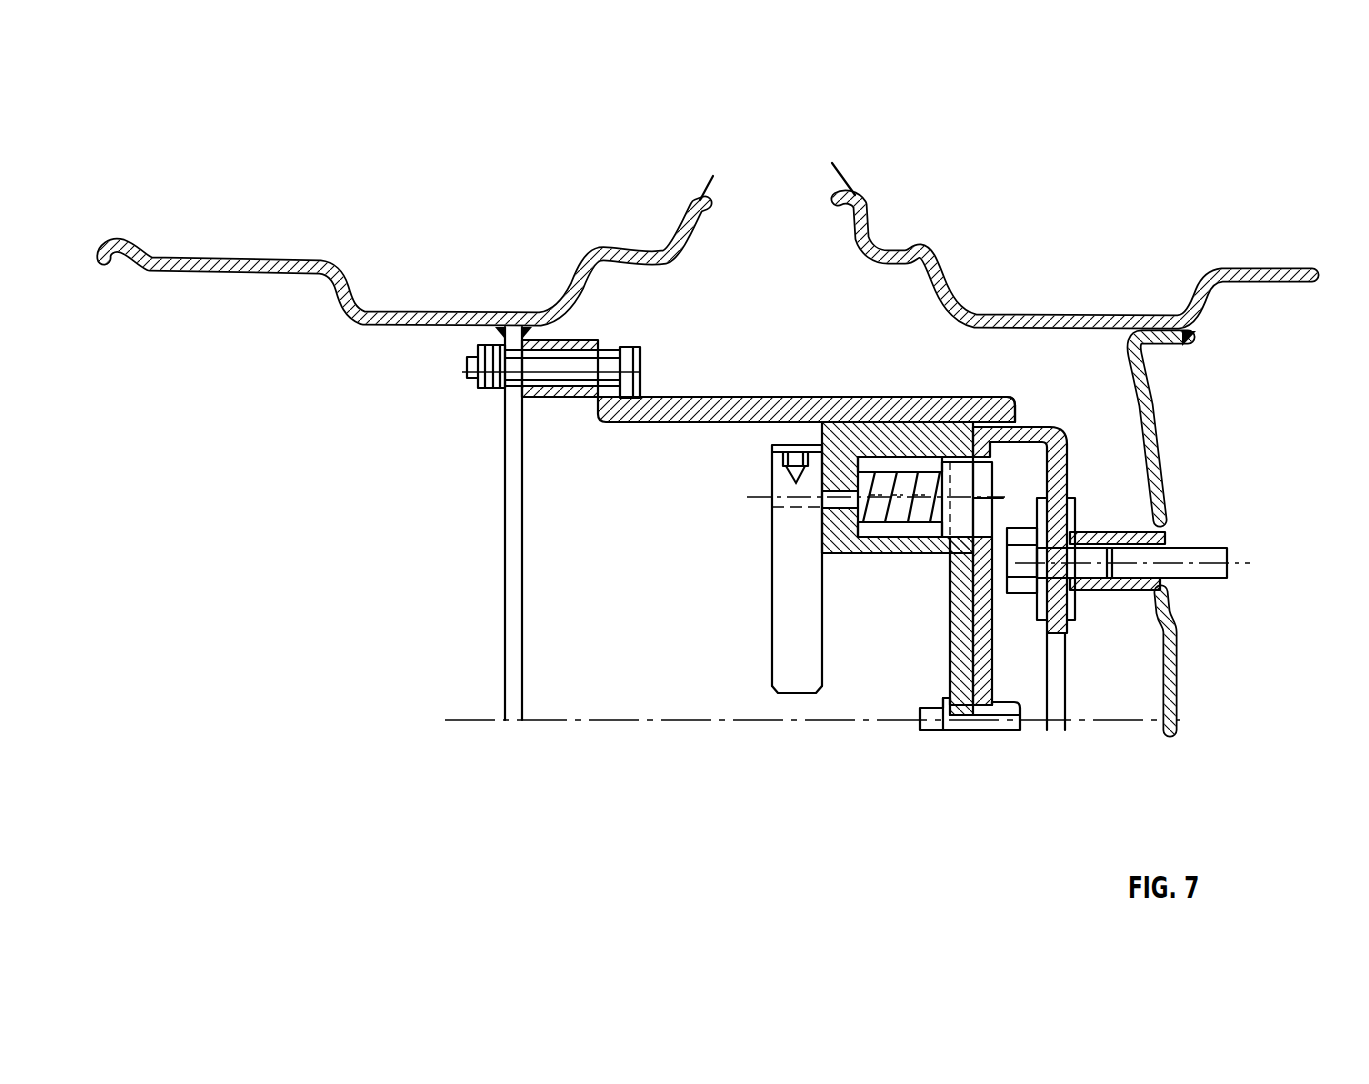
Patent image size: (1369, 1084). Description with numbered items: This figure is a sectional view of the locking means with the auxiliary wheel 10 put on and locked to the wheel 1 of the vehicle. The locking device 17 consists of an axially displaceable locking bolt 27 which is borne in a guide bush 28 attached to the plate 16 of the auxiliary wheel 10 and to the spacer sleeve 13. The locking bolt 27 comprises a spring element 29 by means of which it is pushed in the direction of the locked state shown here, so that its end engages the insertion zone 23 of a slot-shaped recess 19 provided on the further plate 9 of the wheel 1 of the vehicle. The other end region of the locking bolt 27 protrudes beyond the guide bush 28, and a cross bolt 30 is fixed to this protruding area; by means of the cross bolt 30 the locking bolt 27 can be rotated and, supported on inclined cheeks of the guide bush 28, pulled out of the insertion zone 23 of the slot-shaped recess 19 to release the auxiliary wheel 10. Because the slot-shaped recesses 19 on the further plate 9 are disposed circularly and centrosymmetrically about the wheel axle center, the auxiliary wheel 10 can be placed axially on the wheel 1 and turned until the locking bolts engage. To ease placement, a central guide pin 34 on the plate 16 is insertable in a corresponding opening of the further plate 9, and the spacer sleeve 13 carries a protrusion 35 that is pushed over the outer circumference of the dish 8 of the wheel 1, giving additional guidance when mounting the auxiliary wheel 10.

The wheel of the vehicle 1 is at (1250, 228).
The dish 8 is at (1100, 490).
The further plate 9 is at (998, 653).
The auxiliary wheel 10 is at (372, 228).
The spacer sleeve 13 is at (734, 397).
The plate 16 is at (950, 658).
The locking device 17 is at (768, 637).
The slot-shaped recess 19 is at (1043, 425).
The insertion zone 23 is at (1003, 542).
The locking bolt 27 is at (963, 525).
The guide bush 28 is at (890, 432).
The spring element 29 is at (920, 483).
The cross bolt 30 is at (797, 683).
The central guide pin 34 is at (1000, 718).
The protrusion 35 is at (1017, 405).